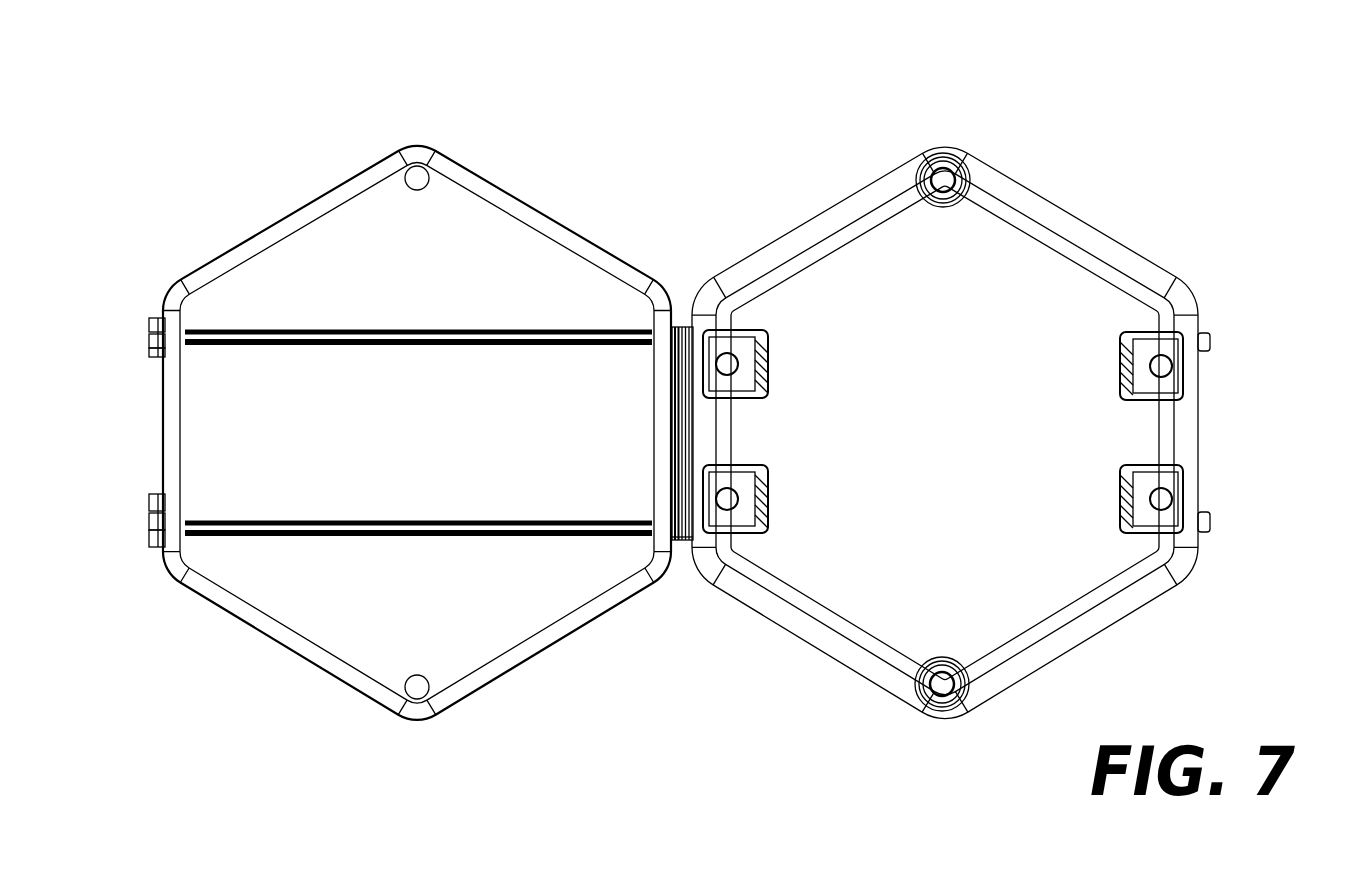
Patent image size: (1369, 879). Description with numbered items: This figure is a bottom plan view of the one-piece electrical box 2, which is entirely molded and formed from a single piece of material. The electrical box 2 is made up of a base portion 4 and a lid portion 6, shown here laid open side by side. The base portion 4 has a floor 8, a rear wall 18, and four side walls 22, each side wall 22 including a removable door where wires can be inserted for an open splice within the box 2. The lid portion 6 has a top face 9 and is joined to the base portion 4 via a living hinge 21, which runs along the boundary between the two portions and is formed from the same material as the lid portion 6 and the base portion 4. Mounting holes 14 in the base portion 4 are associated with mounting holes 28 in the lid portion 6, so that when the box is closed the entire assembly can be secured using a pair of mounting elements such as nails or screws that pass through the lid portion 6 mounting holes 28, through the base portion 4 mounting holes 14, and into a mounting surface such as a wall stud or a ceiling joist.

The one-piece electrical box 2 is at (333, 109).
The base portion 4 is at (1256, 248).
The lid portion 6 is at (180, 231).
The floor 8 is at (922, 448).
The top face 9 is at (452, 448).
The mounting holes 14 is at (938, 682).
The rear wall 18 is at (695, 428).
The living hinge 21 is at (679, 545).
The side walls 22 is at (1178, 427).
The mounting holes 28 is at (421, 679).